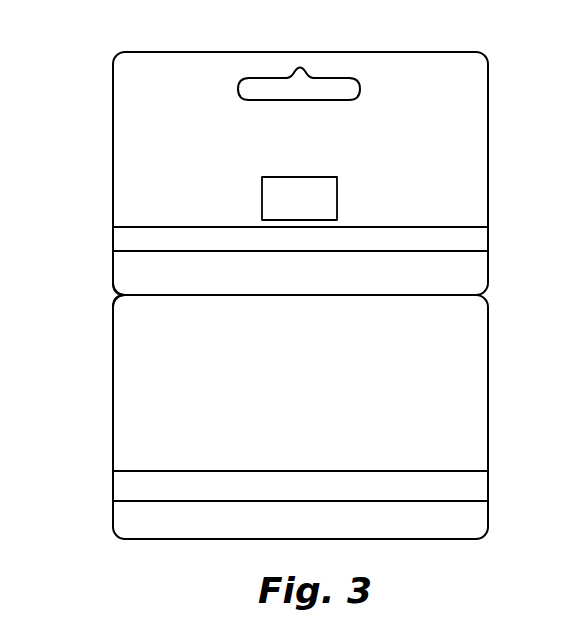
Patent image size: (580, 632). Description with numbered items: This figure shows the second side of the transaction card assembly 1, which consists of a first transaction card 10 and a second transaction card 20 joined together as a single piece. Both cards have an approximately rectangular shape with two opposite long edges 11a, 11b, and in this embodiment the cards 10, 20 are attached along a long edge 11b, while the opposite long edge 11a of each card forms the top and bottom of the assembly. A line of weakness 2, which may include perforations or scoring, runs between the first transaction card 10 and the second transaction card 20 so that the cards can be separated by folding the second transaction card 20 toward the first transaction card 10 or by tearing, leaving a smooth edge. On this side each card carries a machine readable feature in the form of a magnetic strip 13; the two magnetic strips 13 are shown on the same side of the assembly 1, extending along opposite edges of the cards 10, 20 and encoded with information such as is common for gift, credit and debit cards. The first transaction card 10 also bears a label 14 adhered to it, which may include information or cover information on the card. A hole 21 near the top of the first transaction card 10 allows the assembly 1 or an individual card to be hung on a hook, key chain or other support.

The transaction card assembly 1 is at (102, 58).
The first transaction card 10 is at (487, 138).
The second transaction card 20 is at (488, 369).
The long edge 11a is at (447, 52).
The long edge 11b is at (123, 293).
The magnetic strip 13 is at (477, 243).
The label 14 is at (337, 196).
The hole 21 is at (340, 78).
The line of weakness 2 is at (462, 296).